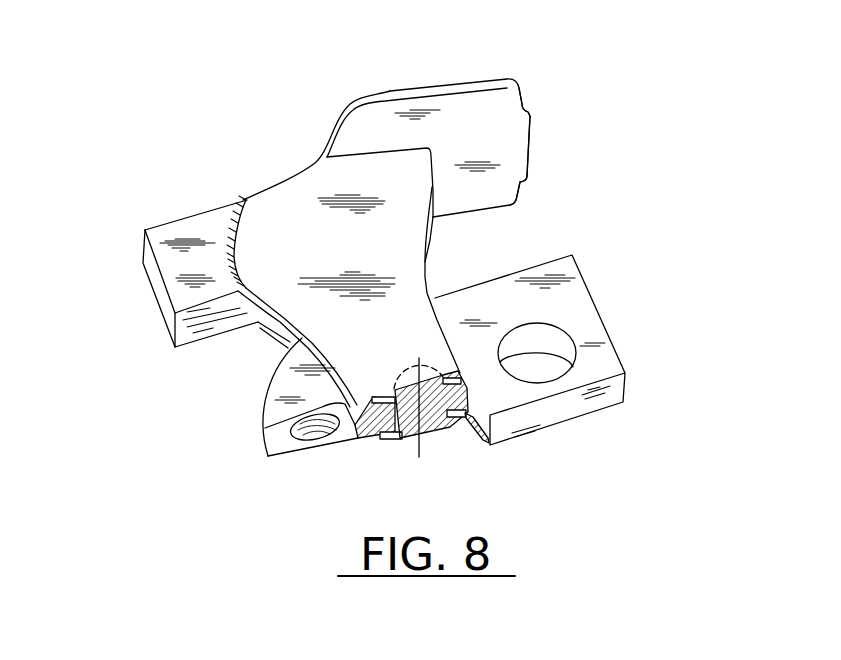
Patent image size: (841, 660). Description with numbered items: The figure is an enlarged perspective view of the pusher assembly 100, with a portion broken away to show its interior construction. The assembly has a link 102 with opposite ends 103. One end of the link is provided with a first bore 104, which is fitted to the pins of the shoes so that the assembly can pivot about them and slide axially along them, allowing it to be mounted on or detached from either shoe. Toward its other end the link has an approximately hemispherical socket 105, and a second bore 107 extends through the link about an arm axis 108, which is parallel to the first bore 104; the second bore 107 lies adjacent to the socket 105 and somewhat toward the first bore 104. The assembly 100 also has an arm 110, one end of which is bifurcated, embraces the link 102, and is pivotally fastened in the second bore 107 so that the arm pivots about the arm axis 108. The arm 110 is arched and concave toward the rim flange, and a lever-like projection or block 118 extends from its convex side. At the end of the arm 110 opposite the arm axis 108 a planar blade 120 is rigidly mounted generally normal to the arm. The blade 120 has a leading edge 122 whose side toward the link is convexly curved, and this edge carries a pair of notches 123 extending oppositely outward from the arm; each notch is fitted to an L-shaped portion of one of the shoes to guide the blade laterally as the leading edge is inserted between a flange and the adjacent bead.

The pusher assembly 100 is at (288, 169).
The link 102 is at (558, 415).
The opposite ends 103 is at (273, 412).
The first bore 104 is at (558, 342).
The hemispherical socket 105 is at (323, 437).
The second bore 107 is at (397, 437).
The arm axis 108 is at (425, 458).
The arm 110 is at (391, 269).
The block 118 is at (155, 248).
The blade 120 is at (408, 85).
The leading edge 122 is at (530, 142).
The notches 123 is at (525, 92).